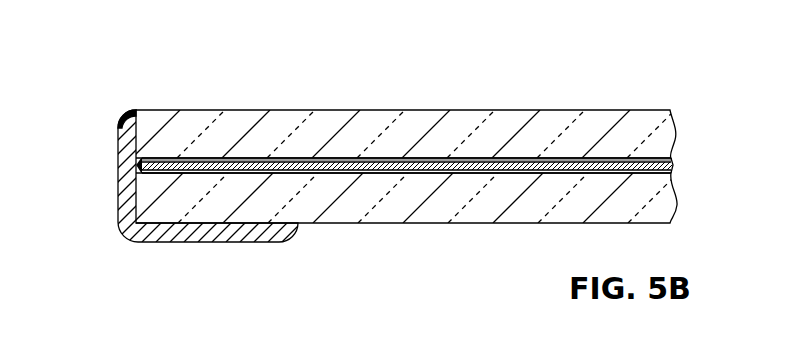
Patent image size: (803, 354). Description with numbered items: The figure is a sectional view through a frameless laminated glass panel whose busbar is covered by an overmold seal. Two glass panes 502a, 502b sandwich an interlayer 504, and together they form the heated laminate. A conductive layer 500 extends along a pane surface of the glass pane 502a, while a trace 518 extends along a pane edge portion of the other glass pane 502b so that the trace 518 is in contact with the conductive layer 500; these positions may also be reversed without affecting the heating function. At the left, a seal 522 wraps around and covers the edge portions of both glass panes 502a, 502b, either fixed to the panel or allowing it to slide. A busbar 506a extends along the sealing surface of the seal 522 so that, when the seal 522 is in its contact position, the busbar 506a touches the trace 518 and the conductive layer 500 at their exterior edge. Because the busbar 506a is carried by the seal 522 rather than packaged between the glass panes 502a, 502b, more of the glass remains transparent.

The conductive layer 500 is at (215, 160).
The glass pane 502a is at (423, 110).
The glass pane 502b is at (377, 223).
The interlayer 504 is at (673, 167).
The busbar 506a is at (142, 165).
The trace 518 is at (169, 174).
The seal 522 is at (130, 146).